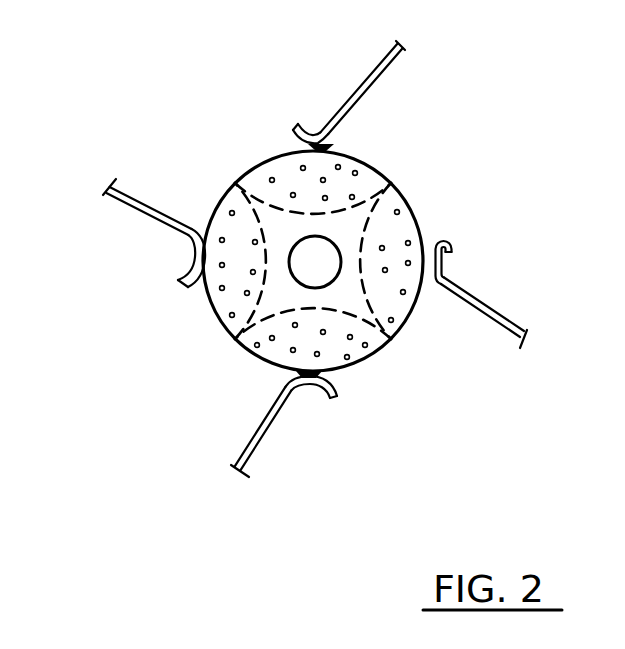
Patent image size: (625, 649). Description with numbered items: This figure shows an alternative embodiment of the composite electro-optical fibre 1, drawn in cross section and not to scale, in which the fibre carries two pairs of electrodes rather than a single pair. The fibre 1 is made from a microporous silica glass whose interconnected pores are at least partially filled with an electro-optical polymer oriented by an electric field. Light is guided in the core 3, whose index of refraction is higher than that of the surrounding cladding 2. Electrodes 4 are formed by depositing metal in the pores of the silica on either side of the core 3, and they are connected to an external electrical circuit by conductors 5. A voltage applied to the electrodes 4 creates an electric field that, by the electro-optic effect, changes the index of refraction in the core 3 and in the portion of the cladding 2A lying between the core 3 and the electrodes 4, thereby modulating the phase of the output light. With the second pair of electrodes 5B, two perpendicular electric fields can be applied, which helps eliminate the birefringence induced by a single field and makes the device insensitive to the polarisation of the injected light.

The electro-optical fibre 1 is at (215, 203).
The cladding 2 is at (353, 223).
The portion of the cladding 2A is at (402, 311).
The core 3 is at (322, 258).
The electrodes 4 is at (293, 177).
The conductors 5 is at (157, 230).
The pair of electrodes 5B is at (310, 127).